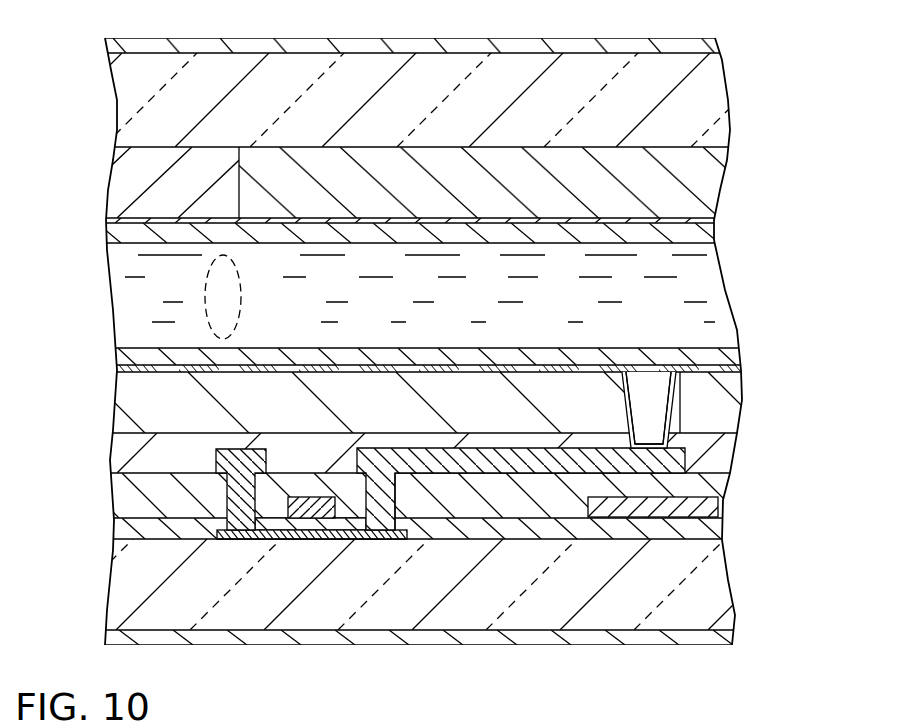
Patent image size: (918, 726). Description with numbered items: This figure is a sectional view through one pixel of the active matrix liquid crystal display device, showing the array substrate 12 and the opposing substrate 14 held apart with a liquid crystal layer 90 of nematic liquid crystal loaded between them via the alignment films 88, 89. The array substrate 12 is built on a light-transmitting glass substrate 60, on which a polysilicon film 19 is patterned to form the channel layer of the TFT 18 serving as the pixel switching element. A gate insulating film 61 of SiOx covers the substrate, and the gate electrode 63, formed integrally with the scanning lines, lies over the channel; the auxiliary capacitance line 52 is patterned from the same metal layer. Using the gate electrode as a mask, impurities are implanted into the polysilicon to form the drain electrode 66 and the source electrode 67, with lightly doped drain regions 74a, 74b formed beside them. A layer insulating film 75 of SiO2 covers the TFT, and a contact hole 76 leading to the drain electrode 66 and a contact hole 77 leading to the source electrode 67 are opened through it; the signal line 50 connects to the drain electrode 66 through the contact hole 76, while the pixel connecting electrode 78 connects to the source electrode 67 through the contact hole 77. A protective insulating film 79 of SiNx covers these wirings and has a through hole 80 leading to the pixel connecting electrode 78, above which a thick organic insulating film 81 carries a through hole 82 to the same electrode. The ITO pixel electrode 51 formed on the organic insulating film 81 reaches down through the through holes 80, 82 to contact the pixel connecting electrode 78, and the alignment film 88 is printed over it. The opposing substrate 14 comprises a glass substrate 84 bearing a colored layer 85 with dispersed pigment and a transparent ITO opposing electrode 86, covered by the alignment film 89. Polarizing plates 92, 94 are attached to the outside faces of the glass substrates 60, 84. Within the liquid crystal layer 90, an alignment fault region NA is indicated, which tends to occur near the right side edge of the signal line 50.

The array substrate 12 is at (745, 492).
The opposing substrate 14 is at (738, 142).
The TFT 18 is at (312, 541).
The polysilicon film 19 is at (291, 540).
The signal line 50 is at (231, 452).
The pixel electrode 51 is at (148, 368).
The auxiliary capacitance line 52 is at (657, 510).
The glass substrate 60 is at (118, 586).
The gate insulating film 61 is at (125, 531).
The gate electrode 63 is at (305, 500).
The drain electrode 66 is at (239, 540).
The source electrode 67 is at (380, 540).
The LDD 74a is at (276, 541).
The LDD 74b is at (345, 541).
The layer insulating film 75 is at (116, 498).
The contact hole 76 is at (217, 523).
The contact hole 77 is at (393, 483).
The pixel connecting electrode 78 is at (500, 456).
The protective insulating film 79 is at (118, 454).
The through hole 80 is at (629, 429).
The organic insulating film 81 is at (130, 403).
The through hole 82 is at (640, 389).
The glass substrate 84 is at (120, 101).
The colored layer 85 is at (118, 179).
The opposing electrode 86 is at (113, 220).
The alignment film 88 is at (120, 360).
The alignment film 89 is at (117, 236).
The liquid crystal layer 90 is at (118, 288).
The polarizing plate 92 is at (113, 637).
The polarizing plate 94 is at (112, 48).
The alignment fault region NA is at (206, 297).